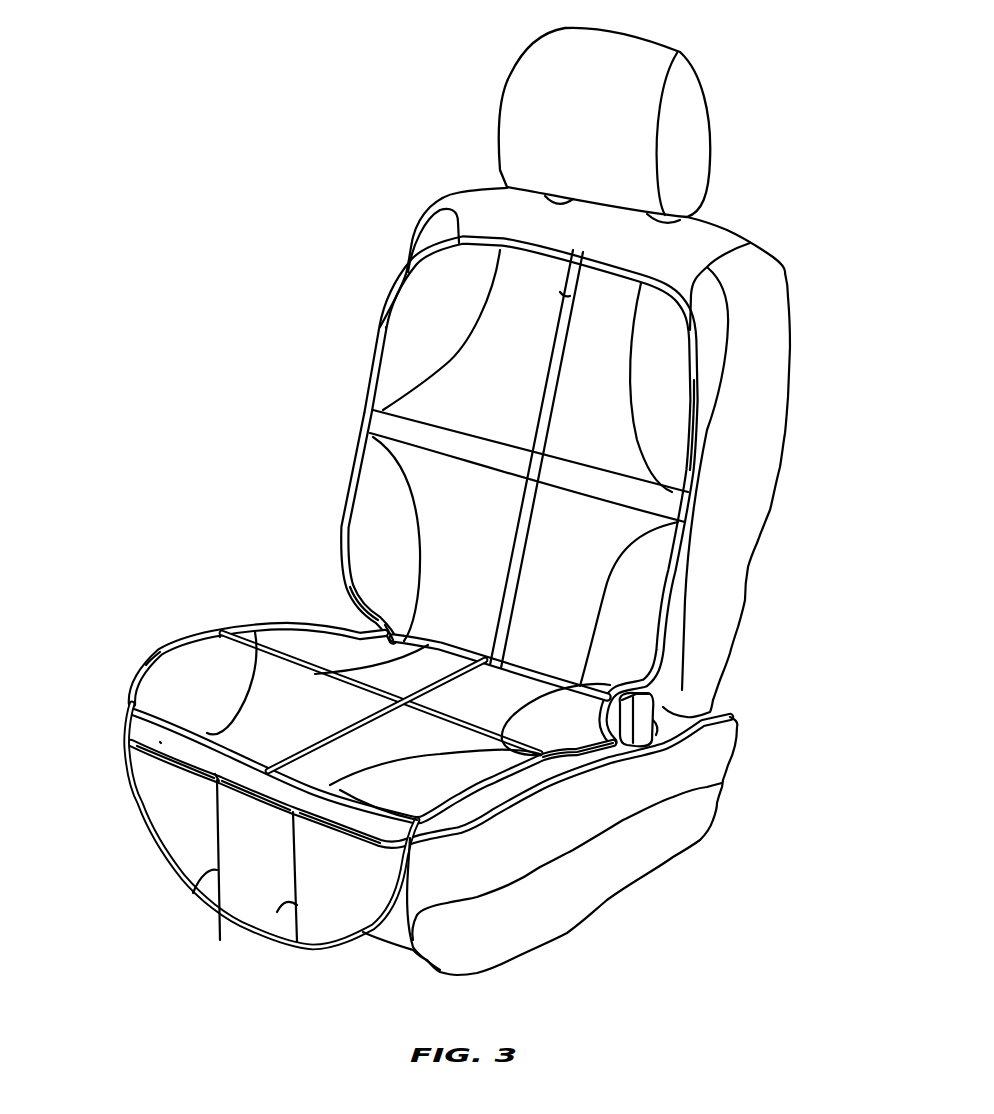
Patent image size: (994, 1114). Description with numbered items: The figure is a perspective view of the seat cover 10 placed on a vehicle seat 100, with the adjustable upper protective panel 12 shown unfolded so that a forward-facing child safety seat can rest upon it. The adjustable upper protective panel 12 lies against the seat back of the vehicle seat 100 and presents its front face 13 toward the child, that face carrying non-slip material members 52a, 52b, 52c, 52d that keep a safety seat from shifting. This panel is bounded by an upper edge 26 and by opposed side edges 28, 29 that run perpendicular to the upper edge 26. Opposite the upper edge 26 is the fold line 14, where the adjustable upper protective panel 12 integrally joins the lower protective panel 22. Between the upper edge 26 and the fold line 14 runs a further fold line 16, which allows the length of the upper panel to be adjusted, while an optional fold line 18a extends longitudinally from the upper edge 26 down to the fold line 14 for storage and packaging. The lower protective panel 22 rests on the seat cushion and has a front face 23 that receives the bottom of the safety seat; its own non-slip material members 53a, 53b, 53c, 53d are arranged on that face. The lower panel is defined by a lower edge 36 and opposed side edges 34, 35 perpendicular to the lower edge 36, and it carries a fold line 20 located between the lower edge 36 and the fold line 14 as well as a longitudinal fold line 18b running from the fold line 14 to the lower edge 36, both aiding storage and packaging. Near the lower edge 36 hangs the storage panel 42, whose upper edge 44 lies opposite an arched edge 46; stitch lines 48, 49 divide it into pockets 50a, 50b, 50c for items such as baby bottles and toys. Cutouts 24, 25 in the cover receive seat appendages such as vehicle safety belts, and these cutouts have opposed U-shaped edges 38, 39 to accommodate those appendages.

The vehicle seat 100 is at (760, 217).
The seat cover 10 is at (345, 385).
The adjustable upper protective panel 12 is at (595, 409).
The front face 13 is at (620, 452).
The fold line 14 is at (517, 670).
The fold line 16 is at (659, 503).
The fold line 18a is at (562, 292).
The fold line 18b is at (217, 774).
The fold line 20 is at (284, 698).
The lower protective panel 22 is at (220, 637).
The front face 23 is at (492, 716).
The cutout 24 is at (620, 721).
The cutout 25 is at (358, 620).
The upper edge 26 is at (622, 270).
The side edge 28 is at (695, 428).
The side edge 29 is at (386, 327).
The side edge 34 is at (540, 759).
The side edge 35 is at (162, 660).
The lower edge 36 is at (305, 783).
The U shaped edge 38 is at (663, 707).
The U shaped edge 39 is at (360, 622).
The storage panel 42 is at (158, 741).
The upper edge 44 is at (153, 768).
The arched edge 46 is at (240, 920).
The stitch line 48 is at (292, 912).
The stitch line 49 is at (213, 872).
The pocket 50a is at (356, 881).
The pocket 50b is at (271, 856).
The pocket 50c is at (202, 831).
The non-slip material member 52a is at (471, 306).
The non-slip material member 52b is at (681, 366).
The non-slip material member 52c is at (652, 626).
The non-slip material member 52d is at (401, 550).
The non-slip material member 53a is at (358, 663).
The non-slip material member 53b is at (575, 740).
The non-slip material member 53c is at (452, 800).
The non-slip material member 53d is at (208, 706).